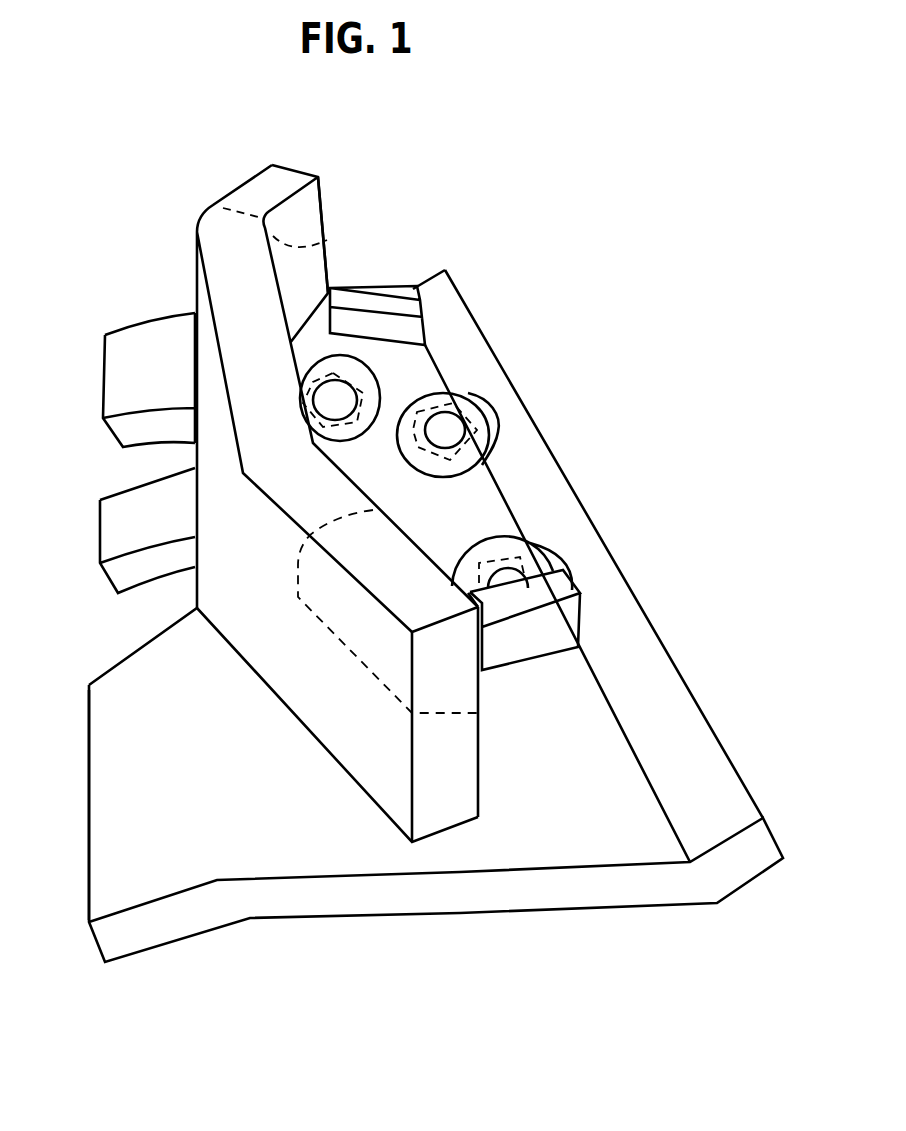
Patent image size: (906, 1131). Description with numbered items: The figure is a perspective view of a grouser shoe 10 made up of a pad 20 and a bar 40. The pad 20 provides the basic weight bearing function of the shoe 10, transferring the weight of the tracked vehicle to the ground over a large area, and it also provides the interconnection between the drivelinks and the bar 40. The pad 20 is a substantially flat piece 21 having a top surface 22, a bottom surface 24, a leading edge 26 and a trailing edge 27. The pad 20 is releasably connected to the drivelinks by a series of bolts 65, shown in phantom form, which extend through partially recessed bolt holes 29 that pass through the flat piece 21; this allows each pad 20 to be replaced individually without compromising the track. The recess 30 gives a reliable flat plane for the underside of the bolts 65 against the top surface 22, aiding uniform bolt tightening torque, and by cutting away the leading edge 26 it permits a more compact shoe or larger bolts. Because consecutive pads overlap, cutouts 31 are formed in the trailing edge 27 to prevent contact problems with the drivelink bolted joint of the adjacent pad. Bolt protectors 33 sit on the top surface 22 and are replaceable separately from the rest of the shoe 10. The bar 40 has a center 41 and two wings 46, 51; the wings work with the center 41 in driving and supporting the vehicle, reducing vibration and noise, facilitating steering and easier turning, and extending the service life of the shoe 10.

The grouser shoe 10 is at (583, 275).
The pad 20 is at (408, 288).
The flat piece 21 is at (262, 785).
The top surface 22 is at (566, 791).
The bottom surface 24 is at (306, 908).
The leading edge 26 is at (687, 734).
The trailing edge 27 is at (118, 817).
The bolt holes 29 is at (437, 432).
The recess 30 is at (472, 455).
The cutouts 31 is at (137, 470).
The bolt protectors 33 is at (527, 640).
The bar 40 is at (220, 258).
The center 41 is at (274, 383).
The wing 46 is at (310, 273).
The wing 51 is at (431, 768).
The bolts 65 is at (498, 412).